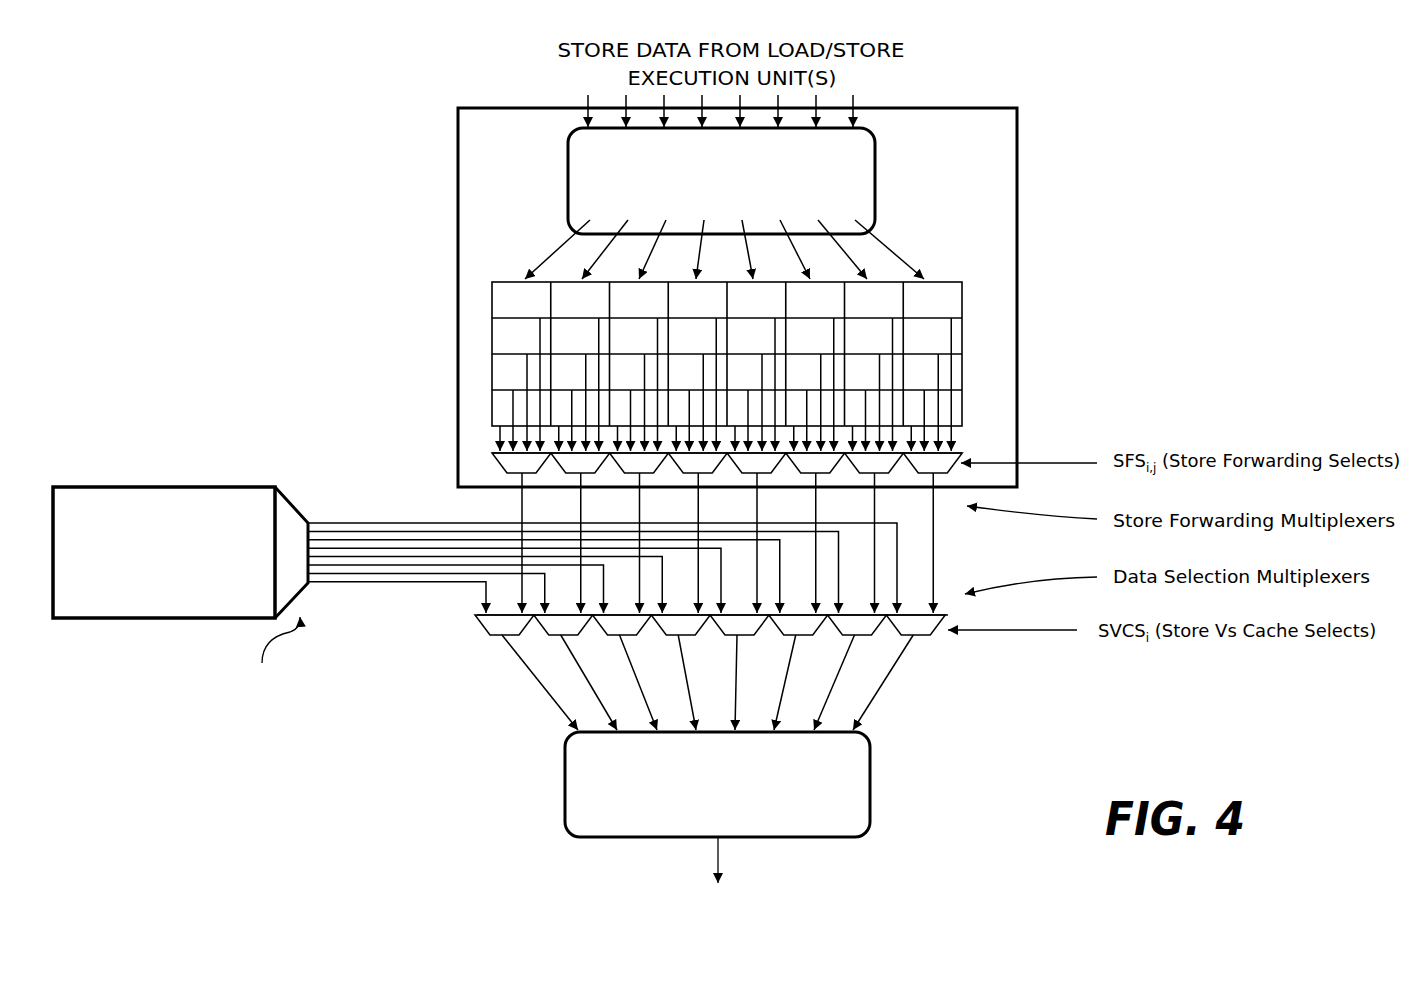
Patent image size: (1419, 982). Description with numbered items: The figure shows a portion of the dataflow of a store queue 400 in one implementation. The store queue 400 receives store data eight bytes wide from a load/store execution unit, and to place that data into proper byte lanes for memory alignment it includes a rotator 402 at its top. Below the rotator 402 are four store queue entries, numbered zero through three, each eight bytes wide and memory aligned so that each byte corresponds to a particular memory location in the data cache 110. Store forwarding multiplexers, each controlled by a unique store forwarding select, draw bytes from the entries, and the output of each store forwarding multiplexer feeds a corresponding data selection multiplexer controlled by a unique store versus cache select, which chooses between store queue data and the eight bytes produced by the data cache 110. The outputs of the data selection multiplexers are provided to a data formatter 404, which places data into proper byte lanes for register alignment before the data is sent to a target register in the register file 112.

The store queue 400 is at (737, 371).
The rotator 402 is at (569, 130).
The data formatter 404 is at (565, 774).
The data cache 110 is at (475, 619).
The register file 112 is at (721, 877).